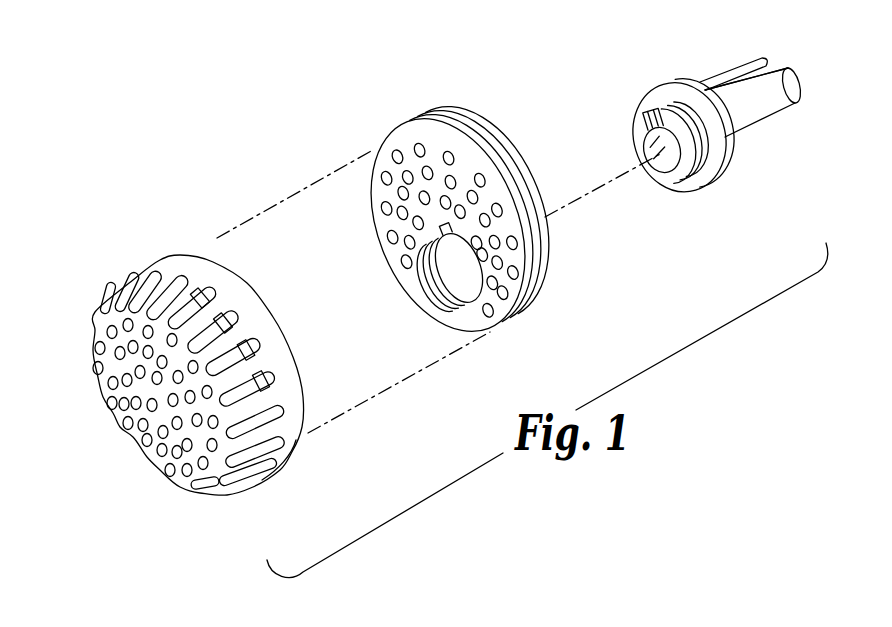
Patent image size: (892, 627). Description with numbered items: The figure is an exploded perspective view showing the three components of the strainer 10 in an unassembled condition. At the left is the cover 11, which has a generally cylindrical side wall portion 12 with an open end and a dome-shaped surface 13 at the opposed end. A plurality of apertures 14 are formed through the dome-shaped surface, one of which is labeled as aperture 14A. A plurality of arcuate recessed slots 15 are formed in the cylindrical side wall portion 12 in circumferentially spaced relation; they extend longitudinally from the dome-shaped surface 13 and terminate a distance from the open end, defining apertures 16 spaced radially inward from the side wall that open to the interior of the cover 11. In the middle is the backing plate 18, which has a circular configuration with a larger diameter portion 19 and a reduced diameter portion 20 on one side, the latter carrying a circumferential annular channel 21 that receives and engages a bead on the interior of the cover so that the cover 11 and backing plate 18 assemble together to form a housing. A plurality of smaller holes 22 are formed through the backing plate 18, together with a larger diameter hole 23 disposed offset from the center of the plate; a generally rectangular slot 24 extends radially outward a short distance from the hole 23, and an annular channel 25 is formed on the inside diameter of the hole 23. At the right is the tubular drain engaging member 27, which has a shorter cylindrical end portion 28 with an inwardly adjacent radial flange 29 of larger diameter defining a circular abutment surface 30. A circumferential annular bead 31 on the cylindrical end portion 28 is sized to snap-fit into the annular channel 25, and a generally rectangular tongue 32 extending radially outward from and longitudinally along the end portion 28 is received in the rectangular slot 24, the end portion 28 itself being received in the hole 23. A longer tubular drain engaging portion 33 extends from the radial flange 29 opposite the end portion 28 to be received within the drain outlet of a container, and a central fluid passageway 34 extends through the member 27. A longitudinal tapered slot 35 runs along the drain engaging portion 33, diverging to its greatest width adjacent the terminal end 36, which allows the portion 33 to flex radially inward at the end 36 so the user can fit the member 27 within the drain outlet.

The strainer 10 is at (556, 56).
The cover 11 is at (147, 266).
The cylindrical side wall portion 12 is at (290, 452).
The dome-shaped surface 13 is at (163, 412).
The apertures 14 is at (157, 378).
The hole 14A is at (107, 329).
The arcuate recessed slots 15 is at (222, 366).
The apertures 16 is at (262, 383).
The backing plate 18 is at (472, 126).
The larger diameter portion 19 is at (548, 270).
The reduced diameter portion 20 is at (397, 128).
The circumferential annular channel 21 is at (546, 292).
The smaller holes 22 is at (391, 211).
The larger diameter hole 23 is at (475, 296).
The rectangular slot 24 is at (432, 248).
The annular channel 25 is at (453, 272).
The tubular drain engaging member 27 is at (705, 88).
The cylindrical end portion 28 is at (707, 162).
The radial flange 29 is at (730, 143).
The circular abutment surface 30 is at (730, 143).
The circumferential annular bead 31 is at (718, 180).
The rectangular tongue 32 is at (662, 97).
The tubular drain engaging portion 33 is at (782, 112).
The central fluid passageway 34 is at (668, 160).
The longitudinal tapered slot 35 is at (742, 63).
The terminal end 36 is at (800, 87).